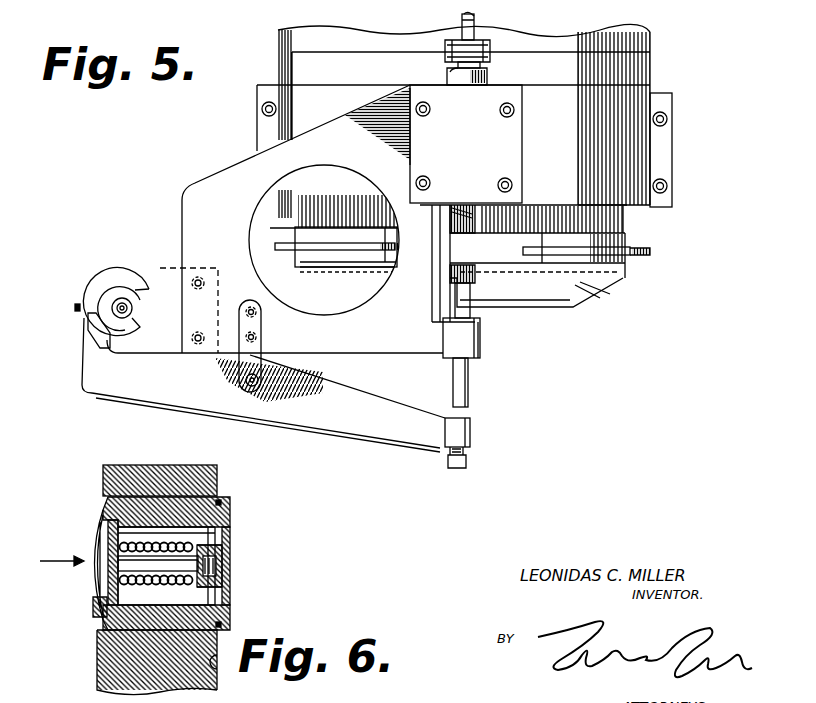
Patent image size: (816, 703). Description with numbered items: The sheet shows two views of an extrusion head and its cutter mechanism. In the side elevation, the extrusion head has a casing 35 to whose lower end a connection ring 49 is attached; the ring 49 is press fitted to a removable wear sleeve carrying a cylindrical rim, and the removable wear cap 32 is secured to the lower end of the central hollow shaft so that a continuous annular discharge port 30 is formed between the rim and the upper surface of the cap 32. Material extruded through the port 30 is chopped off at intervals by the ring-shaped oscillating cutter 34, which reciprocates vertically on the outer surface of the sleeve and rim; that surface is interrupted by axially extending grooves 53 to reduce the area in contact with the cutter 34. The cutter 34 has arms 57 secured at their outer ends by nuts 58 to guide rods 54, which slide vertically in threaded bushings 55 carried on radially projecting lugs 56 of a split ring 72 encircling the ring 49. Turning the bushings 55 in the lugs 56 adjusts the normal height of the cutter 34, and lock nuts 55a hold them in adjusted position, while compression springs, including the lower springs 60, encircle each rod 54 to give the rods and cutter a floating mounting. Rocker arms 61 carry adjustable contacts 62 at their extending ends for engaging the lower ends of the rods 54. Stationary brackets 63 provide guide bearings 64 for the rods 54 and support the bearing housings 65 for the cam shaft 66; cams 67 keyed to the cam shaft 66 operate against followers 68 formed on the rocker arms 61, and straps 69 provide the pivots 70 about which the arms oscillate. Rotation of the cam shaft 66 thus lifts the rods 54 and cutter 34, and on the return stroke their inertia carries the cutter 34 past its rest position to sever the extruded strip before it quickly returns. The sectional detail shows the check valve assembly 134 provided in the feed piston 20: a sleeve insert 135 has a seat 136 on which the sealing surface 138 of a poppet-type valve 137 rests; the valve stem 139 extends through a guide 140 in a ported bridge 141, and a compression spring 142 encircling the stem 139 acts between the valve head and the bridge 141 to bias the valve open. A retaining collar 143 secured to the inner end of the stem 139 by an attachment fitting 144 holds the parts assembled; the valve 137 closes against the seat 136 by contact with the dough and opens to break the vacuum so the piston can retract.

In FIG. 6, the feed piston 20 is at (104, 484).
In FIG. 5, the annular discharge port 30 is at (345, 278).
In FIG. 5, the cap 32 is at (310, 273).
In FIG. 5, the oscillating cutter 34 is at (628, 269).
In FIG. 5, the casing 35 is at (652, 45).
In FIG. 5, the connection ring 49 is at (652, 72).
In FIG. 5, the axially extending grooves 53 is at (625, 226).
In FIG. 5, the guide rods 54 is at (474, 20).
In FIG. 5, the bushings 55 is at (483, 42).
In FIG. 5, the lock nuts 55a is at (448, 80).
In FIG. 5, the radially projecting lugs 56 is at (466, 144).
In FIG. 5, the arms 57 is at (517, 262).
In FIG. 5, the nuts 58 is at (447, 279).
In FIG. 5, the lower compression springs 60 is at (467, 205).
In FIG. 5, the rocker arms 61 is at (367, 428).
In FIG. 5, the adjustable contacts 62 is at (468, 419).
In FIG. 5, the stationary brackets 63 is at (183, 192).
In FIG. 5, the guide bearings 64 is at (472, 343).
In FIG. 5, the bearing housings 65 is at (162, 270).
In FIG. 5, the cam shaft 66 is at (115, 304).
In FIG. 5, the cams 67 is at (118, 276).
In FIG. 5, the followers 68 is at (88, 331).
In FIG. 5, the straps 69 is at (243, 372).
In FIG. 5, the pivots 70 is at (246, 381).
In FIG. 5, the split ring 72 is at (672, 104).
In FIG. 6, the check valve assembly 134 is at (44, 562).
In FIG. 6, the sleeve insert 135 is at (230, 520).
In FIG. 6, the seat 136 is at (108, 628).
In FIG. 6, the poppet-type valve 137 is at (88, 582).
In FIG. 6, the sealing surface 138 is at (93, 606).
In FIG. 6, the valve stem 139 is at (185, 557).
In FIG. 6, the guide 140 is at (218, 594).
In FIG. 6, the ported bridge 141 is at (218, 602).
In FIG. 6, the compression spring 142 is at (120, 545).
In FIG. 6, the retaining collar 143 is at (227, 583).
In FIG. 6, the attachment fitting 144 is at (225, 561).